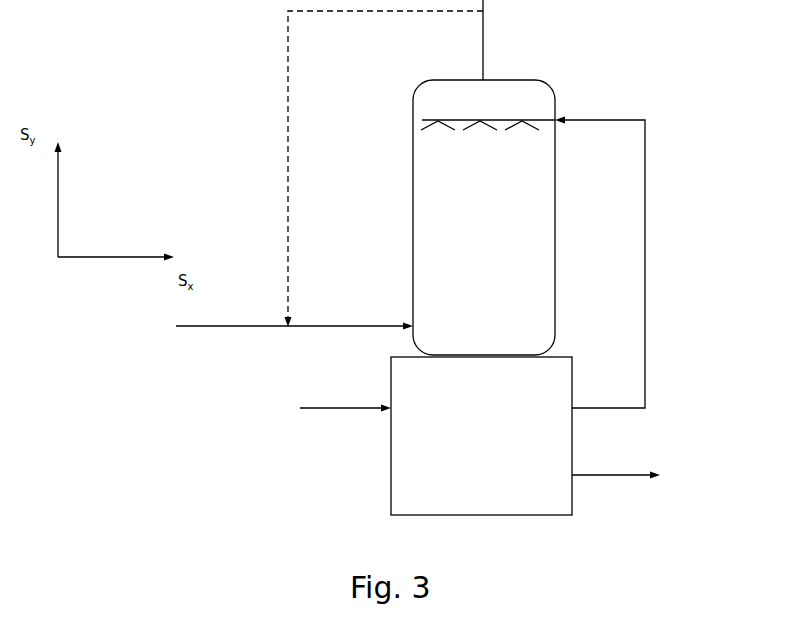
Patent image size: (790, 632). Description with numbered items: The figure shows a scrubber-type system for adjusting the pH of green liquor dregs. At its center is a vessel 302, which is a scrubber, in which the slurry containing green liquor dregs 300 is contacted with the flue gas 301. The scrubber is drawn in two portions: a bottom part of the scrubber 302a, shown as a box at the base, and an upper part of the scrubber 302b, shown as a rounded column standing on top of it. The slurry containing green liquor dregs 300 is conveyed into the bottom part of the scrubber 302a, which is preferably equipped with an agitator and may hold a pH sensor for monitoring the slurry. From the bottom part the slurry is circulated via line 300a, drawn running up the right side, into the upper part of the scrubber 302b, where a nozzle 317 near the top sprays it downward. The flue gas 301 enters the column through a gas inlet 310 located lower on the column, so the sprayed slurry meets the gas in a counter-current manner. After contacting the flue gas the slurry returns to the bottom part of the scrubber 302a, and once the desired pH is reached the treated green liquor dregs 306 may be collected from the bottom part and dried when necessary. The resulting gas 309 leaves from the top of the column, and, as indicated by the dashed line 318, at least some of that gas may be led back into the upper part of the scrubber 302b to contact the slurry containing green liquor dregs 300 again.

The slurry containing green liquor dregs 300 is at (321, 409).
The line 300a is at (645, 268).
The flue gas 301 is at (228, 326).
The vessel 302 is at (201, 87).
The bottom part of the scrubber 302a is at (391, 480).
The upper part of the scrubber 302b is at (413, 205).
The treated green liquor dregs 306 is at (630, 478).
The gas 309 is at (483, 58).
The gas inlet 310 is at (413, 326).
The nozzle 317 is at (490, 127).
The line 318 is at (288, 152).